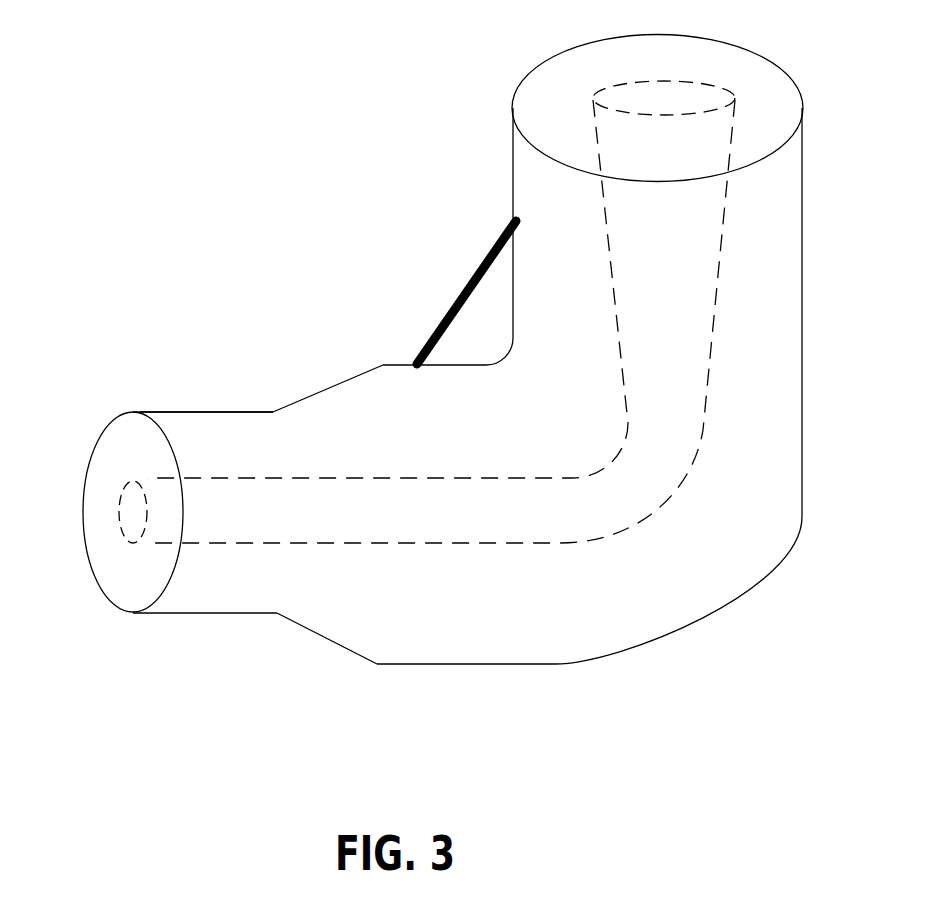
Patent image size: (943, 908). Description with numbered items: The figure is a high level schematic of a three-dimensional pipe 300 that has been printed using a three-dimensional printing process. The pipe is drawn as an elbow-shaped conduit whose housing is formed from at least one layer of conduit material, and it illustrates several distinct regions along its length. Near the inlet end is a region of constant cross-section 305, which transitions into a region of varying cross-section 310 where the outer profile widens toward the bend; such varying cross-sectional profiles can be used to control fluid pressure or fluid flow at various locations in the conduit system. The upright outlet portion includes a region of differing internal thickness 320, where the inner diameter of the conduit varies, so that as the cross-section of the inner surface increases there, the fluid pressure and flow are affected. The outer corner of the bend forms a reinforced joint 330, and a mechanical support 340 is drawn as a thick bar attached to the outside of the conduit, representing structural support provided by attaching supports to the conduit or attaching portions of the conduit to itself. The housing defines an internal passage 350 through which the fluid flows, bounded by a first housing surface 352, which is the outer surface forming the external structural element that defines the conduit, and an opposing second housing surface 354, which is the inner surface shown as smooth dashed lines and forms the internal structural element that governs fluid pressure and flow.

The 3D pipe 300 is at (415, 405).
The region of constant cross-section 305 is at (213, 652).
The region of varying cross-section 310 is at (320, 673).
The region of differing internal thickness 320 is at (598, 330).
The reinforced joint 330 is at (687, 683).
The mechanical support 340 is at (483, 260).
The internal passage 350 is at (135, 515).
The first housing surface 352 is at (217, 412).
The second housing surface 354 is at (442, 478).